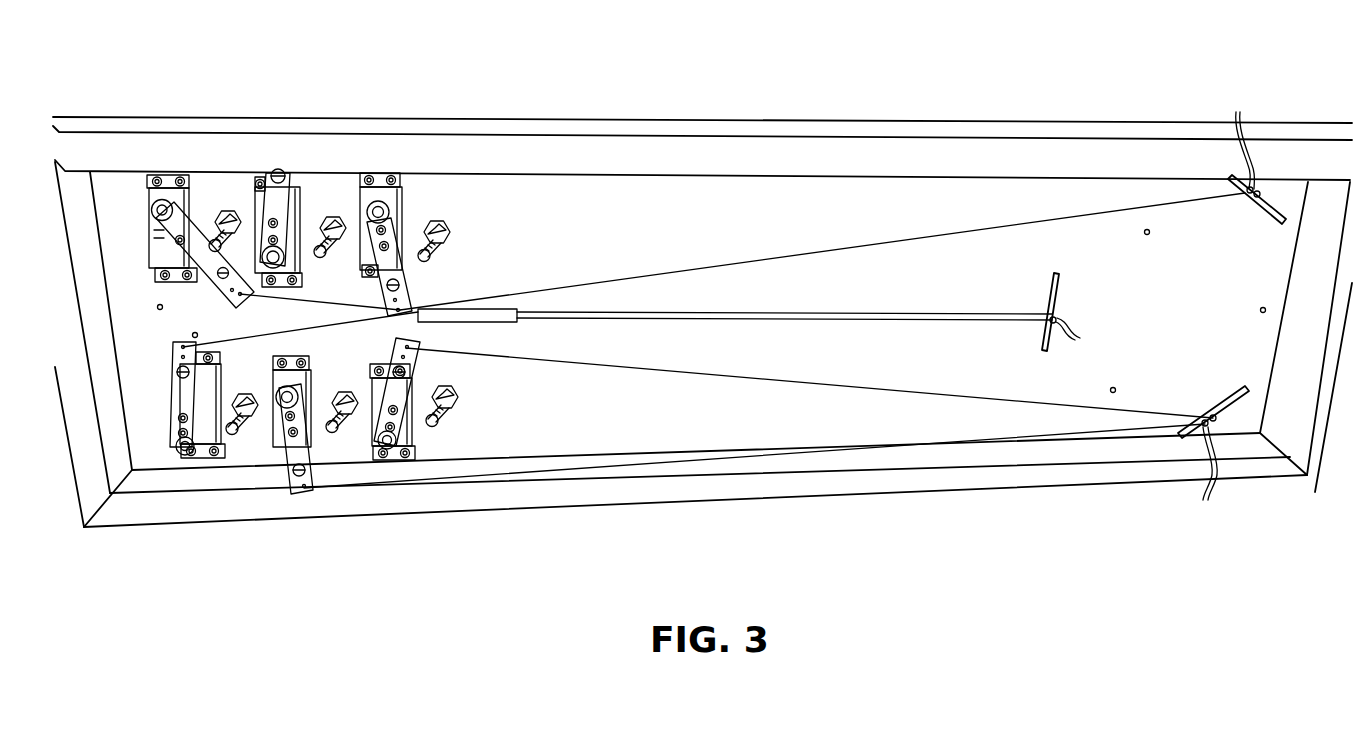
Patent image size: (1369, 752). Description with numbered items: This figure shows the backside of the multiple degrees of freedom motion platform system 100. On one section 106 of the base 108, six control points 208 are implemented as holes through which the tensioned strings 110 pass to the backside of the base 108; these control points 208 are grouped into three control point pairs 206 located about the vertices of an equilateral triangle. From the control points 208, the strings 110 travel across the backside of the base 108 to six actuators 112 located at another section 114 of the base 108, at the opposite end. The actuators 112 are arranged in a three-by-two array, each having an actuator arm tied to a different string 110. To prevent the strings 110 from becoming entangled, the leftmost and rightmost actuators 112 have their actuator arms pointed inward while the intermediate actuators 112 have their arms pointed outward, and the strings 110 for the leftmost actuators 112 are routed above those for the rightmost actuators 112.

The multiple degrees of freedom motion platform system 100 is at (188, 40).
The section of base 106 is at (1153, 550).
The base 108 is at (683, 495).
The tensioned strings 110 is at (613, 462).
The actuators 112 is at (400, 178).
The another section of base 114 is at (382, 548).
The control point pairs 206 is at (1275, 184).
The control points 208 is at (1157, 305).